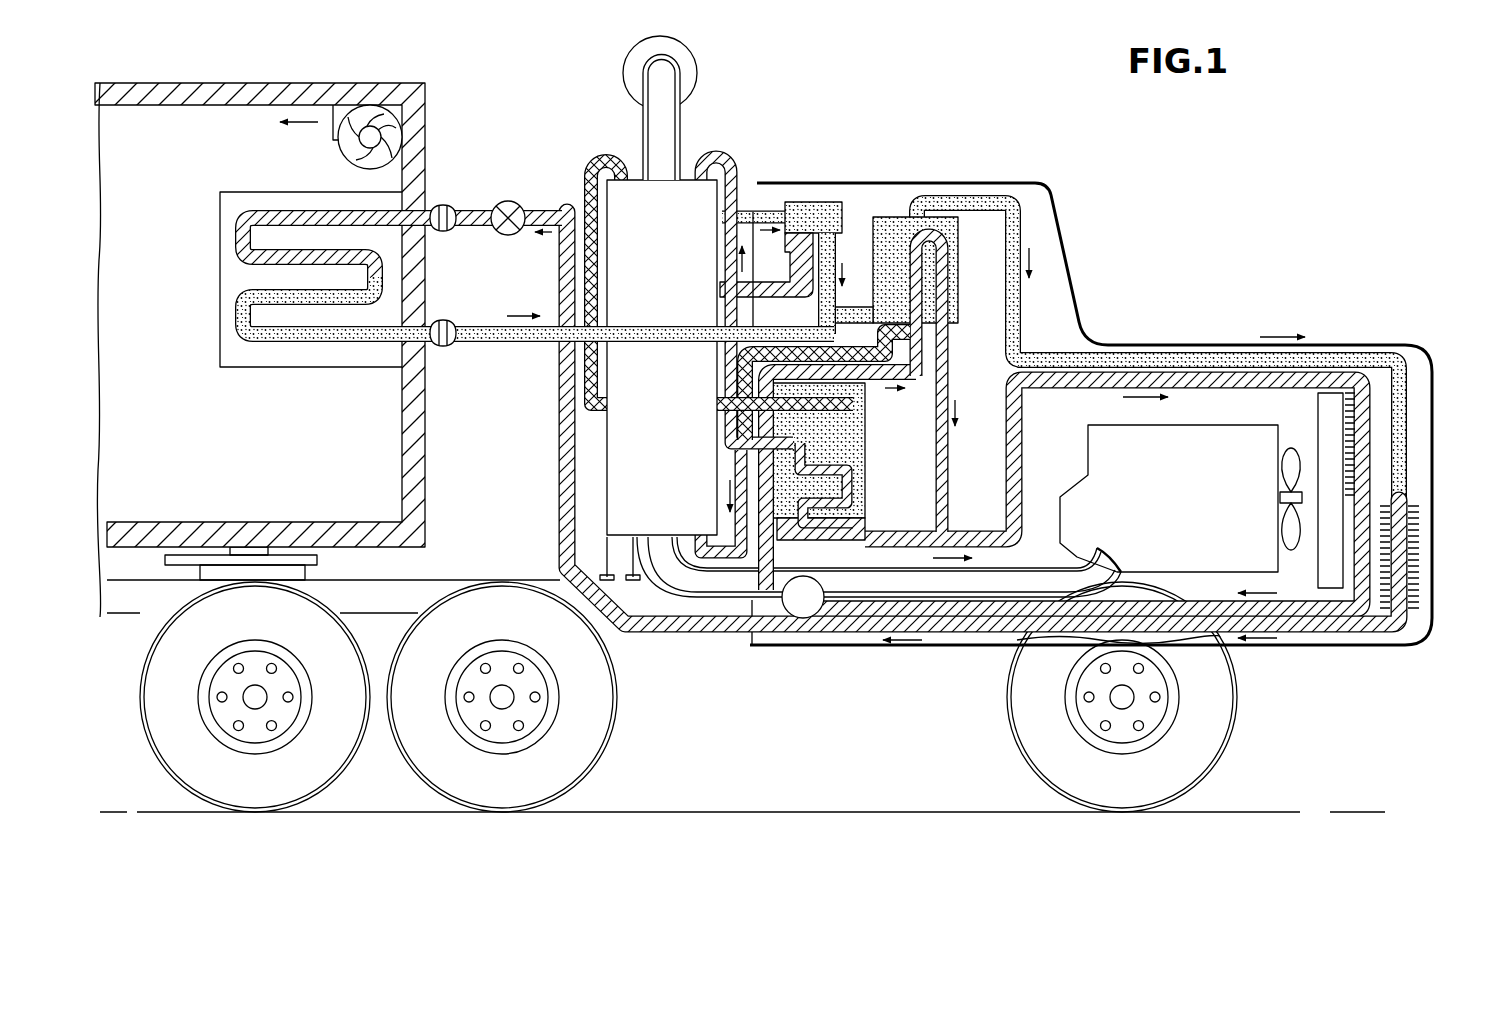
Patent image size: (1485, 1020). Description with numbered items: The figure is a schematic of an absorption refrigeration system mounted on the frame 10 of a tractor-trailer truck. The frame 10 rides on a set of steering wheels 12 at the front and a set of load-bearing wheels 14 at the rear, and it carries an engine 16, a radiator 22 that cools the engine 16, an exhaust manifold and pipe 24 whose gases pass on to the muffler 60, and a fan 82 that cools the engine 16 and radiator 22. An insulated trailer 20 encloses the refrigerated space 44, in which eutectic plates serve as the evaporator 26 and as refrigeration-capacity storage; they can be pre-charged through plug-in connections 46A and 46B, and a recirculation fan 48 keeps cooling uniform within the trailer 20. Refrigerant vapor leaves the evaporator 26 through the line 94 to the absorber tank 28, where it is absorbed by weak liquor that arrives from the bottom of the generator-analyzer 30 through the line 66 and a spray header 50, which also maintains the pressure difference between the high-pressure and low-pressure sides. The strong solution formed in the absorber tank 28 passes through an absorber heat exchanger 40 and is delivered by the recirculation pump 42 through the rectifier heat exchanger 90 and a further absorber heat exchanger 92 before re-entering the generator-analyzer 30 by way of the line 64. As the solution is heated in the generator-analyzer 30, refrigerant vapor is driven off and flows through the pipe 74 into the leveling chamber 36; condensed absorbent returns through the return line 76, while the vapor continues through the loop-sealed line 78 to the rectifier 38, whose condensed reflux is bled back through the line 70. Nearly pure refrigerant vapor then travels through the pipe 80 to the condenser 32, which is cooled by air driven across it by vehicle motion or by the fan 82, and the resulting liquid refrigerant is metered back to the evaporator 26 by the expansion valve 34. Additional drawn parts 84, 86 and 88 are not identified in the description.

The frame 10 is at (1070, 263).
The steering wheels 12 is at (1237, 745).
The load-bearing wheels 14 is at (416, 782).
The engine 16 is at (1172, 518).
The insulated enclosure or trailer 20 is at (212, 83).
The radiator 22 is at (1329, 590).
The exhaust manifold and pipe 24 is at (944, 583).
The evaporator 26 is at (260, 367).
The absorber tank 28 is at (868, 442).
The generator-analyzer 30 is at (647, 483).
The condenser 32 is at (1412, 552).
The expansion valve 34 is at (516, 203).
The leveling chamber 36 is at (812, 203).
The rectifier 38 is at (951, 268).
The absorber heat exchanger 40 is at (1352, 413).
The recirculation pump 42 is at (803, 618).
The refrigerated space 44 is at (157, 289).
The plug-in connection 46A is at (447, 205).
The plug-in connection 46B is at (448, 348).
The recirculation fan 48 is at (355, 122).
The spray header 50 is at (858, 405).
The muffler 60 is at (697, 75).
The line 64 is at (722, 160).
The line 66 is at (604, 166).
The reflux line 70 is at (862, 348).
The pipe 74 is at (757, 210).
The return line 76 is at (780, 297).
The line 78 is at (858, 307).
The pipe 80 is at (1036, 362).
The fan 82 is at (1290, 550).
The engine housing 84 is at (995, 542).
The housing bottom wall 86 is at (1158, 602).
The conduit 88 is at (764, 586).
The rectifier heat exchanger 90 is at (933, 305).
The absorber heat exchanger 92 is at (870, 488).
The line 94 is at (505, 348).